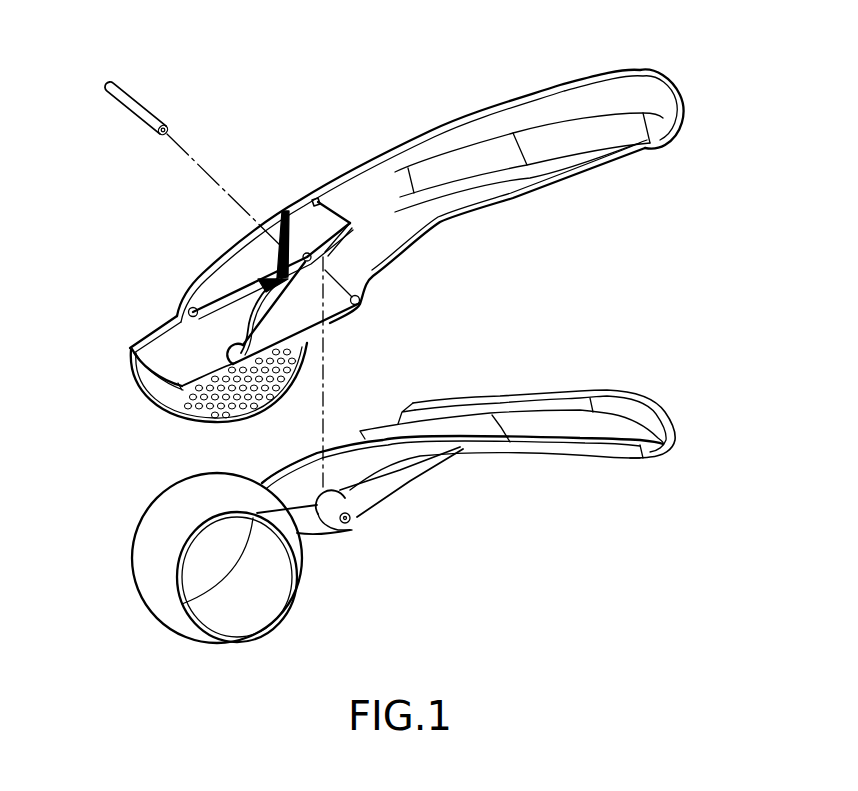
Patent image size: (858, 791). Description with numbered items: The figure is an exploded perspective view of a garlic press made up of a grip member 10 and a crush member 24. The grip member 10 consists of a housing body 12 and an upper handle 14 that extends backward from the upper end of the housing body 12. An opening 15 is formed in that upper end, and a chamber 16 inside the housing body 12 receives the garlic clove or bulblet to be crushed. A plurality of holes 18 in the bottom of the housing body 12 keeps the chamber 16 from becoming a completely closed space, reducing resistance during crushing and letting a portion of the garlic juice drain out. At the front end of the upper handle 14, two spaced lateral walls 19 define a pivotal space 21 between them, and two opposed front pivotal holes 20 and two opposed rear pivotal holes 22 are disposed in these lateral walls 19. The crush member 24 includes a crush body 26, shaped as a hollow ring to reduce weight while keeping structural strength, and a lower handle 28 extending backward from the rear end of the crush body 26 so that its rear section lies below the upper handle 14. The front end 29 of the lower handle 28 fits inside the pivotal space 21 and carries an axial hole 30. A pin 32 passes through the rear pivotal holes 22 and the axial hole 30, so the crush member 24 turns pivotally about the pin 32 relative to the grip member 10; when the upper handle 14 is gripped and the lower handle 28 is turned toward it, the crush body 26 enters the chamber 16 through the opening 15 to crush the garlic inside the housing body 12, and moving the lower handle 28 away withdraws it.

The grip member 10 is at (705, 92).
The housing body 12 is at (153, 388).
The upper handle 14 is at (500, 157).
The opening 15 is at (133, 348).
The chamber 16 is at (165, 343).
The holes 18 is at (180, 417).
The lateral walls 19 is at (257, 265).
The front pivotal holes 20 is at (190, 308).
The pivotal space 21 is at (305, 237).
The rear pivotal holes 22 is at (330, 250).
The crush member 24 is at (708, 412).
The crush body 26 is at (145, 587).
The lower handle 28 is at (547, 427).
The front end 29 is at (350, 470).
The axial hole 30 is at (353, 530).
The pin 32 is at (140, 100).